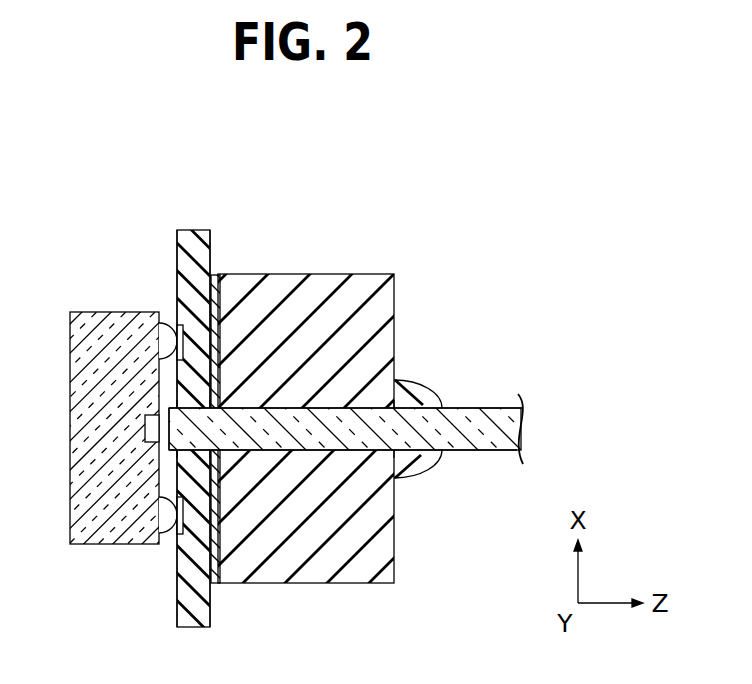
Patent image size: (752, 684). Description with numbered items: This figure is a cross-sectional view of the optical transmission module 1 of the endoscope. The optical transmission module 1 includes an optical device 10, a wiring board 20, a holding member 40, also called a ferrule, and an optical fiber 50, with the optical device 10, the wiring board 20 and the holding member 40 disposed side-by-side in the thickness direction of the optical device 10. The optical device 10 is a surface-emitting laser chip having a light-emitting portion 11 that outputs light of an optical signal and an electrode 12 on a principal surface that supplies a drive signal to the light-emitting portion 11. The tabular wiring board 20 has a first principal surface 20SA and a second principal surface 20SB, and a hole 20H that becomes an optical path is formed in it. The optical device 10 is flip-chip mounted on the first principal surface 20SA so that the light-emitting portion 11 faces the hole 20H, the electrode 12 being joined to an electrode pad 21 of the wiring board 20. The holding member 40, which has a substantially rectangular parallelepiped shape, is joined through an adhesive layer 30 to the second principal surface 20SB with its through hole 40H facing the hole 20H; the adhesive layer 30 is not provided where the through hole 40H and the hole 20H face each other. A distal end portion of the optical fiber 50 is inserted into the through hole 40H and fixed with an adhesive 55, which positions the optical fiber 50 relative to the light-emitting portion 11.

The optical transmission module 1 is at (596, 236).
The optical device 10 is at (98, 544).
The light-emitting portion 11 is at (147, 427).
The electrode 12 is at (164, 314).
The wiring board 20 is at (186, 230).
The hole 20H is at (165, 454).
The first principal surface 20SA is at (170, 244).
The second principal surface 20SB is at (218, 244).
The electrode pad 21 is at (187, 330).
The adhesive layer 30 is at (216, 275).
The holding member 40 is at (348, 274).
The through hole 40H is at (405, 457).
The optical fiber 50 is at (448, 406).
The adhesive 55 is at (423, 378).